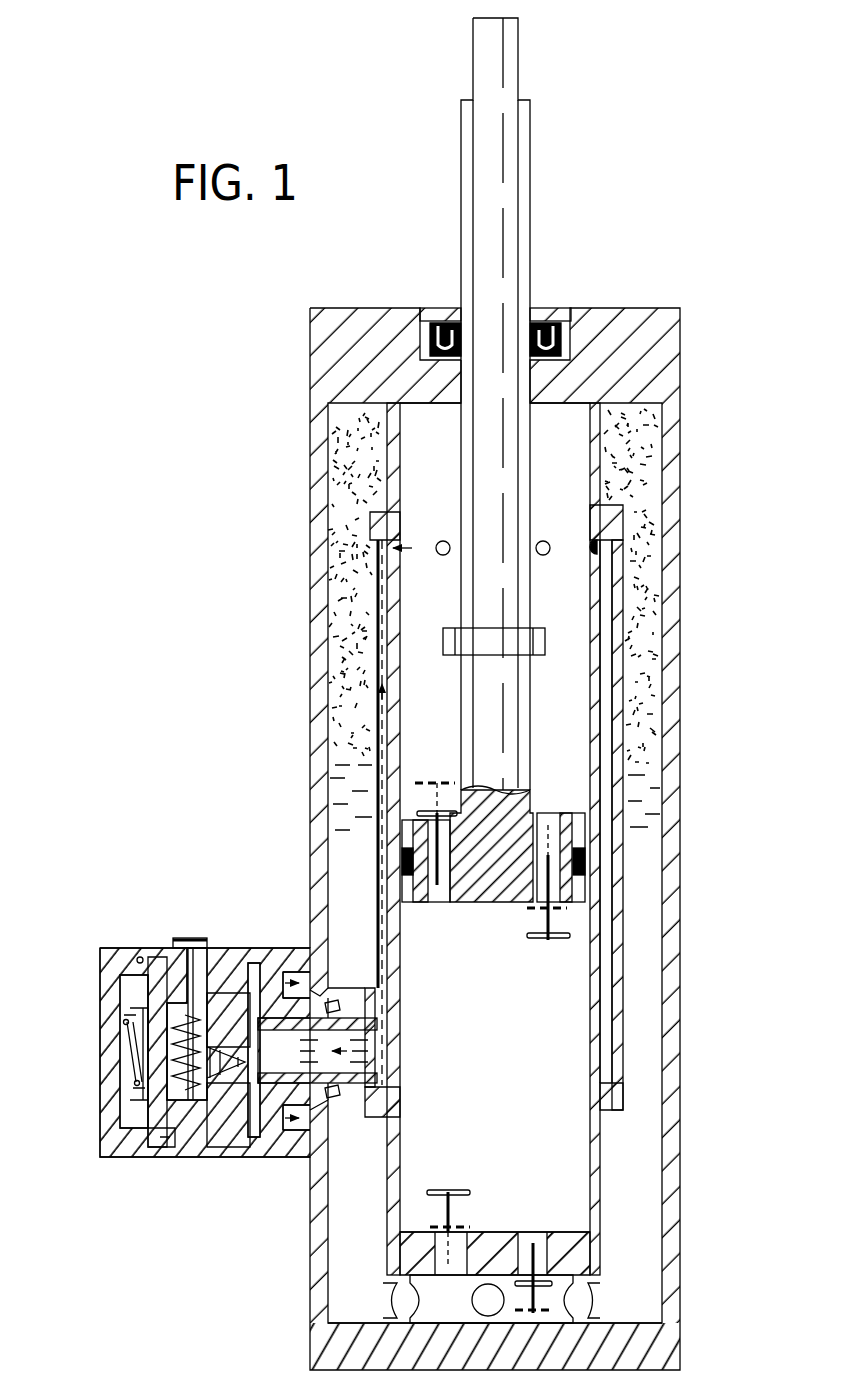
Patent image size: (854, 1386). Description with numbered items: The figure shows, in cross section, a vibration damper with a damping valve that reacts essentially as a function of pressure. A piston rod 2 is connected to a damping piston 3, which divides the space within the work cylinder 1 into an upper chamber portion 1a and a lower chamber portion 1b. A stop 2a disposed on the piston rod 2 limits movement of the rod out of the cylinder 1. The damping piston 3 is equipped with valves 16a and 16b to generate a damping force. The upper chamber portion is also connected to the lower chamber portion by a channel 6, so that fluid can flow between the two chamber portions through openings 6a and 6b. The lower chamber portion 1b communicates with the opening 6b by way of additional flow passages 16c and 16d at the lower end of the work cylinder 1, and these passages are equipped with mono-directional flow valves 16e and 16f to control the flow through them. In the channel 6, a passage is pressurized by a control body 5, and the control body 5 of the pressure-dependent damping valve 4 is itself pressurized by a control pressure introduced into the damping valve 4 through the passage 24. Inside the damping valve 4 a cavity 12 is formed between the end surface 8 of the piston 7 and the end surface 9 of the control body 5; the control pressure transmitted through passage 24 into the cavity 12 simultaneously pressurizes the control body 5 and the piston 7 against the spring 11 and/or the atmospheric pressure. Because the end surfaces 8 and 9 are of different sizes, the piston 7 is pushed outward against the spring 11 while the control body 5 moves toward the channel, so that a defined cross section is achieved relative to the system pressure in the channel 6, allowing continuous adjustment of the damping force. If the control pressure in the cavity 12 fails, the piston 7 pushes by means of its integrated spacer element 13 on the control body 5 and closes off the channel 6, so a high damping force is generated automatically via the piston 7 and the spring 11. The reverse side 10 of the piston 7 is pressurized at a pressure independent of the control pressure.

The work cylinder 1 is at (392, 626).
The upper chamber portion 1a is at (574, 488).
The lower chamber portion 1b is at (563, 1065).
The piston rod 2 is at (513, 227).
The stop 2a is at (548, 640).
The damping piston 3 is at (572, 827).
The damping valve 4 is at (96, 980).
The control body 5 is at (243, 1105).
The channel 6 is at (377, 697).
The opening 6a is at (432, 540).
The opening 6b is at (332, 1100).
The piston 7 is at (130, 1133).
The end surface 8 is at (185, 1152).
The end surface 9 is at (210, 1150).
The reverse side 10 is at (143, 1115).
The spring 11 is at (137, 1087).
The cavity 12 is at (197, 973).
The spacer element 13 is at (134, 950).
The valve 16a is at (557, 942).
The valve 16b is at (420, 778).
The flow passage 16c is at (388, 1300).
The flow passage 16d is at (545, 1248).
The mono-directional flow valve 16e is at (453, 1208).
The mono-directional flow valve 16f is at (588, 1303).
The passage 24 is at (182, 938).